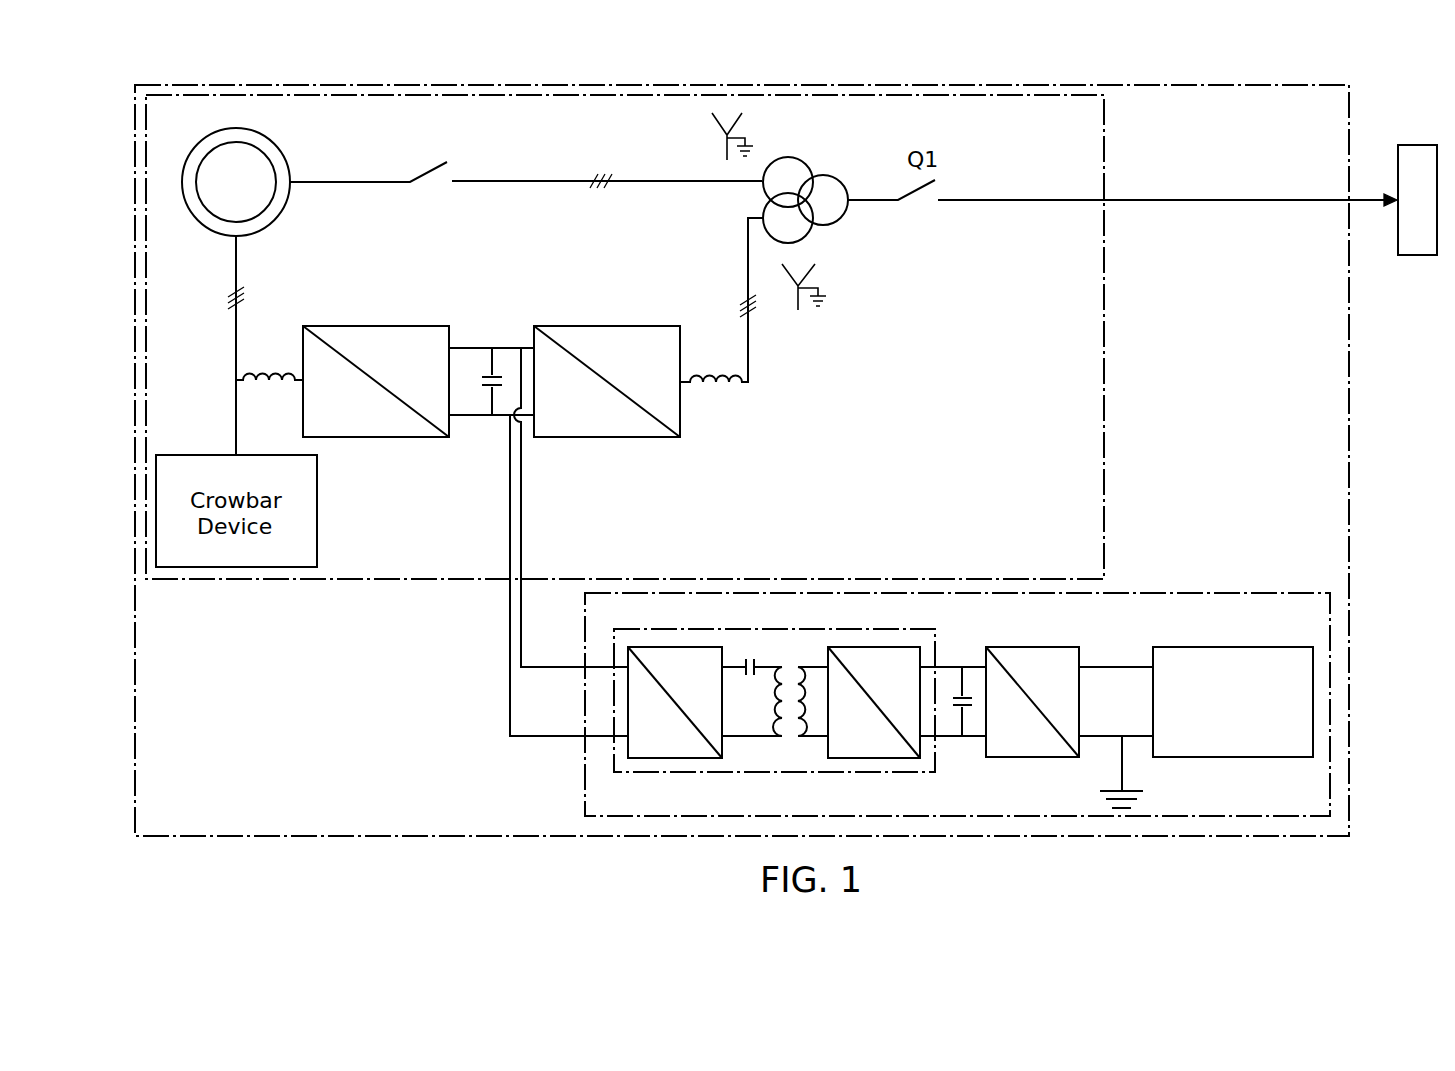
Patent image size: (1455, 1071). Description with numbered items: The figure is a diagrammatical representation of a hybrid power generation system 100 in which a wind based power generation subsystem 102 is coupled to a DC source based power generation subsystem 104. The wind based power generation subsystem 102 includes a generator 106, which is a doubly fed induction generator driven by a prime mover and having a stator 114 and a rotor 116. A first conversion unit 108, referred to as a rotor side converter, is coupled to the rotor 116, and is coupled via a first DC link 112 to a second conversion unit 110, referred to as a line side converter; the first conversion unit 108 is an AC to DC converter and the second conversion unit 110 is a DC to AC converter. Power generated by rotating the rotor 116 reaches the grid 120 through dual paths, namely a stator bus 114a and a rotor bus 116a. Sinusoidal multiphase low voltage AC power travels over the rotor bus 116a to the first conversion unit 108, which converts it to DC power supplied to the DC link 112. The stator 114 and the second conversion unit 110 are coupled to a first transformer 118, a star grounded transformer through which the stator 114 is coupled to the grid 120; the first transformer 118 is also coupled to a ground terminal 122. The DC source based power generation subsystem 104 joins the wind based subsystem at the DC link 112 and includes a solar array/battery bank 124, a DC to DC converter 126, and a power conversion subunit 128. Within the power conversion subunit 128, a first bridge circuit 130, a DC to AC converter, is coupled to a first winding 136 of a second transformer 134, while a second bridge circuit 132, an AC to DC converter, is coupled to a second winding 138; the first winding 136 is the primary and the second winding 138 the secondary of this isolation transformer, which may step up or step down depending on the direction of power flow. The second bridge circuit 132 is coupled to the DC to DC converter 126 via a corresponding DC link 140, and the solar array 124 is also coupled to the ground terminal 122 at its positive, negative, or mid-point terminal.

The hybrid power generation system 100 is at (1349, 773).
The wind based power generation subsystem 102 is at (1104, 131).
The DC source based power generation subsystem 104 is at (1330, 629).
The generator 106 is at (223, 170).
The first conversion unit 108 is at (377, 326).
The second conversion unit 110 is at (607, 326).
The first DC link 112 is at (489, 368).
The stator 114 is at (284, 150).
The stator bus 114a is at (490, 181).
The rotor 116 is at (268, 206).
The rotor bus 116a is at (236, 350).
The first transformer 118 is at (820, 173).
The grid 120 is at (1420, 145).
The ground terminal 122 is at (818, 310).
The solar array/battery bank 124 is at (1232, 647).
The DC to DC converter 126 is at (1020, 647).
The power conversion subunit 128 is at (896, 631).
The first bridge circuit 130 is at (675, 647).
The second bridge circuit 132 is at (875, 647).
The second transformer 134 is at (775, 738).
The first winding 136 is at (776, 705).
The second winding 138 is at (803, 705).
The corresponding DC link 140 is at (962, 695).